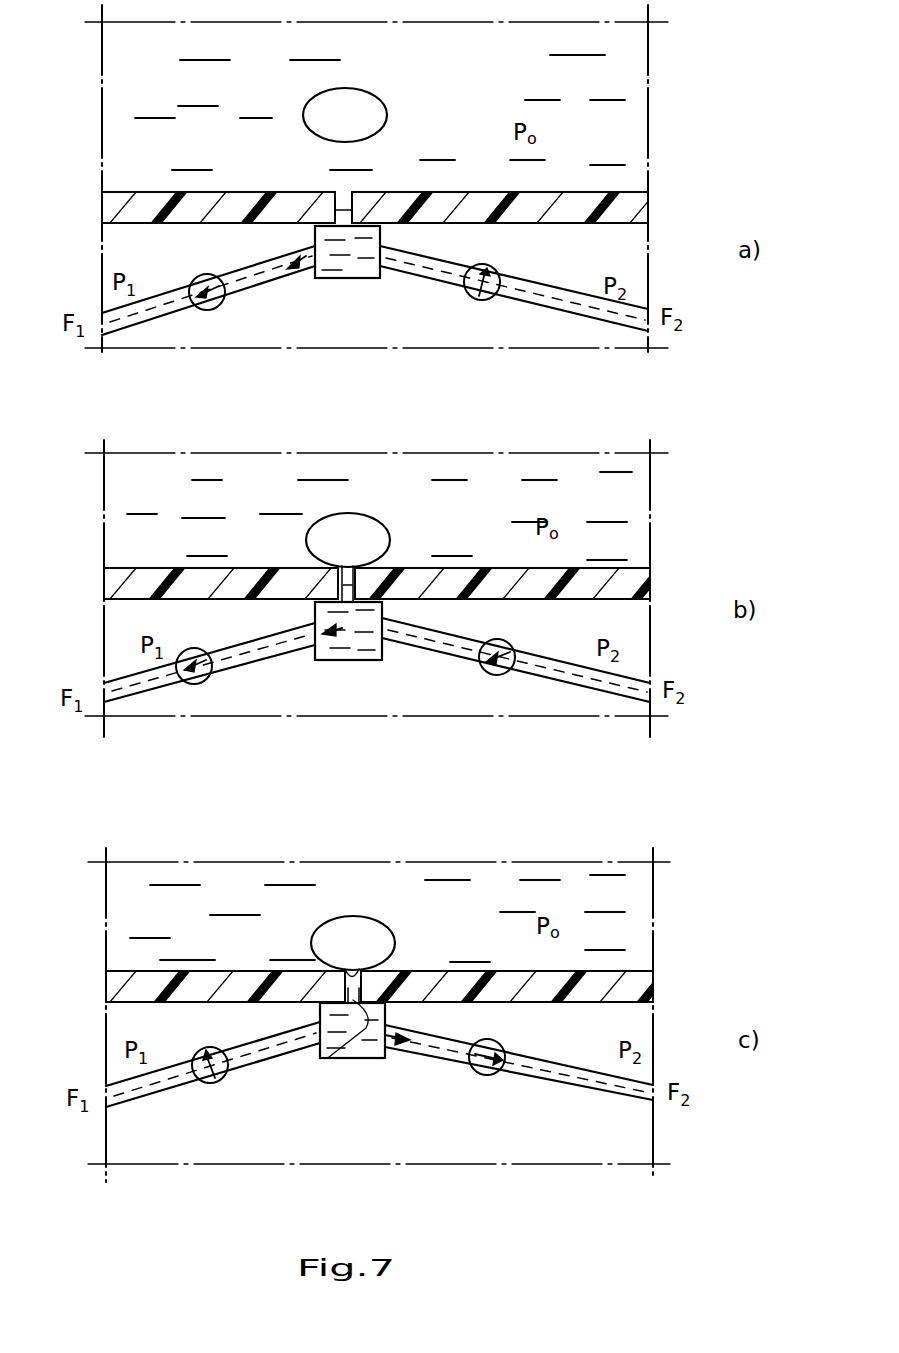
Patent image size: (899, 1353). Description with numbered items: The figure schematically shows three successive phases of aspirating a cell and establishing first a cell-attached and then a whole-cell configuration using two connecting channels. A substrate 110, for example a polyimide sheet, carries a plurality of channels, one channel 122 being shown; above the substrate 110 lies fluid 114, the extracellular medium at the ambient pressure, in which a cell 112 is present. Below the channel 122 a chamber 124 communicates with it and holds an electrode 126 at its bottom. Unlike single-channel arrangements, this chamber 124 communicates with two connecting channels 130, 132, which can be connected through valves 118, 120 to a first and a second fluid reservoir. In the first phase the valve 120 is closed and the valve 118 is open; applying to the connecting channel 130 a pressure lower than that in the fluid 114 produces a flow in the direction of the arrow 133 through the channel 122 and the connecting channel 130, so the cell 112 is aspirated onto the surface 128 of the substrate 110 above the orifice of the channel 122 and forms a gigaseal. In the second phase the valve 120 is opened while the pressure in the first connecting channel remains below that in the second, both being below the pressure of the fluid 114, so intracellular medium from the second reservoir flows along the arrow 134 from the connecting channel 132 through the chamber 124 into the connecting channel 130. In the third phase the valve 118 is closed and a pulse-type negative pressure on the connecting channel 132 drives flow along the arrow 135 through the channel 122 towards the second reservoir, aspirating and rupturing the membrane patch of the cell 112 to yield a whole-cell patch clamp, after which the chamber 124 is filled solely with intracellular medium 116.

In FIG. 7a, the substrate 110 is at (632, 208).
In FIG. 7b, the substrate 110 is at (384, 583).
In FIG. 7c, the substrate 110 is at (388, 986).
In FIG. 7a, the cell 112 is at (386, 104).
In FIG. 7b, the cell 112 is at (362, 513).
In FIG. 7c, the cell 112 is at (368, 913).
In FIG. 7a, the fluid 114 is at (198, 90).
In FIG. 7b, the fluid 114 is at (203, 506).
In FIG. 7c, the fluid 114 is at (153, 921).
In FIG. 7a, the intracellular medium 116 is at (322, 265).
In FIG. 7b, the intracellular medium 116 is at (350, 660).
In FIG. 7c, the intracellular medium 116 is at (357, 1060).
In FIG. 7a, the valve 118 is at (215, 306).
In FIG. 7b, the valve 118 is at (202, 684).
In FIG. 7c, the valve 118 is at (217, 1082).
In FIG. 7a, the valve 120 is at (478, 300).
In FIG. 7b, the valve 120 is at (500, 676).
In FIG. 7c, the valve 120 is at (500, 1074).
In FIG. 7a, the channel 122 is at (356, 200).
In FIG. 7b, the channel 122 is at (357, 590).
In FIG. 7c, the channel 122 is at (362, 993).
In FIG. 7a, the chamber 124 is at (384, 236).
In FIG. 7b, the chamber 124 is at (386, 612).
In FIG. 7c, the chamber 124 is at (392, 1028).
In FIG. 7a, the electrode 126 is at (365, 282).
In FIG. 7b, the electrode 126 is at (372, 660).
In FIG. 7c, the electrode 126 is at (374, 1060).
In FIG. 7a, the surface 128 is at (540, 180).
In FIG. 7a, the connecting channel 130 is at (128, 322).
In FIG. 7b, the connecting channel 130 is at (139, 690).
In FIG. 7c, the connecting channel 130 is at (129, 1100).
In FIG. 7a, the connecting channel 132 is at (614, 320).
In FIG. 7b, the connecting channel 132 is at (630, 688).
In FIG. 7c, the connecting channel 132 is at (642, 1092).
In FIG. 7a, the arrow 133 is at (305, 251).
In FIG. 7b, the arrow 134 is at (342, 628).
In FIG. 7c, the arrow 135 is at (330, 1062).